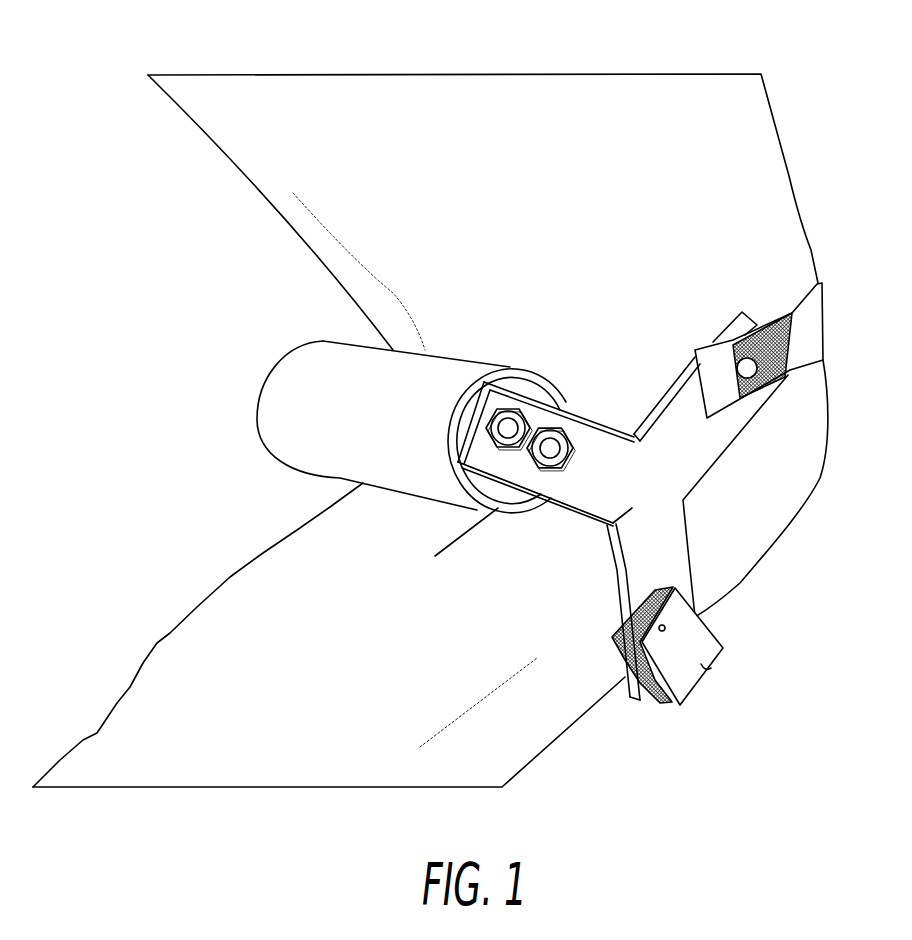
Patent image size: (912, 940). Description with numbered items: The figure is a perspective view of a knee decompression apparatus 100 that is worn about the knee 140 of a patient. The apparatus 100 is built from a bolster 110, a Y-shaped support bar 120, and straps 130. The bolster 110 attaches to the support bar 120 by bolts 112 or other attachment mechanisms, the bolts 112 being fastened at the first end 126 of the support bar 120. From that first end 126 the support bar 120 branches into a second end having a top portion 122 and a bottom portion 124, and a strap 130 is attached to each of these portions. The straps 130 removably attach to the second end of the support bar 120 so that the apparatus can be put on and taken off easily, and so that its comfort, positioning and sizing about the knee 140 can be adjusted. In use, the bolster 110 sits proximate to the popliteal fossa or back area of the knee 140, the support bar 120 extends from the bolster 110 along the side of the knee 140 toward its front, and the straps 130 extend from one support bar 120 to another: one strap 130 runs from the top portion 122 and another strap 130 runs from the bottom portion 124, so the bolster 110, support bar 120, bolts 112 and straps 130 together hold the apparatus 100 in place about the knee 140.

The knee decompression apparatus 100 is at (528, 123).
The bolster 110 is at (396, 478).
The bolts 112 is at (498, 403).
The support bar 120 is at (616, 522).
The top portion 122 is at (693, 357).
The bottom portion 124 is at (687, 555).
The first end 126 is at (557, 508).
The strap 130 is at (802, 302).
The knee 140 is at (697, 185).